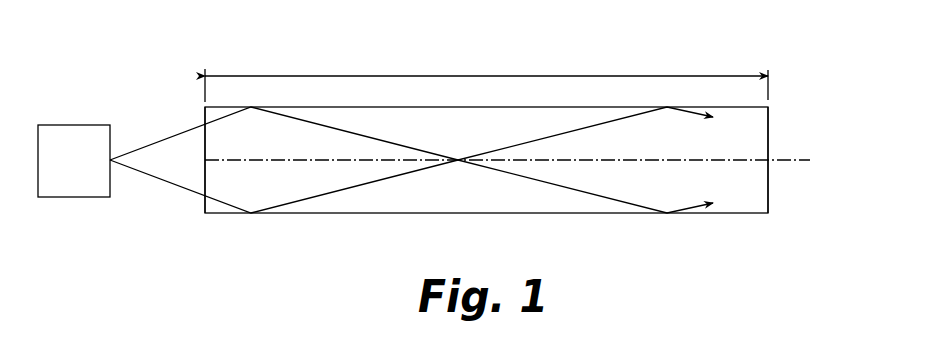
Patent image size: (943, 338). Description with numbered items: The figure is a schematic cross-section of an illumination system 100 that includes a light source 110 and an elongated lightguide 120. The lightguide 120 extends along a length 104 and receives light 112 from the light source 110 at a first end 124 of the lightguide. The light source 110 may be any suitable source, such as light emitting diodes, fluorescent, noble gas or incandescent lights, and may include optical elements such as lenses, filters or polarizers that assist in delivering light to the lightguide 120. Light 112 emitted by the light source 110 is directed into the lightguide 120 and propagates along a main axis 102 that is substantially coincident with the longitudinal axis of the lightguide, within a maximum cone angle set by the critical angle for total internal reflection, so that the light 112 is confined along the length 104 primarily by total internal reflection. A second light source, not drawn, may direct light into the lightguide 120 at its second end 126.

The illumination system 100 is at (695, 57).
The main axis 102 is at (793, 160).
The length 104 is at (413, 77).
The light source 110 is at (72, 123).
The light 112 is at (157, 142).
The lightguide 120 is at (342, 213).
The first end 124 is at (203, 205).
The second end 126 is at (770, 202).